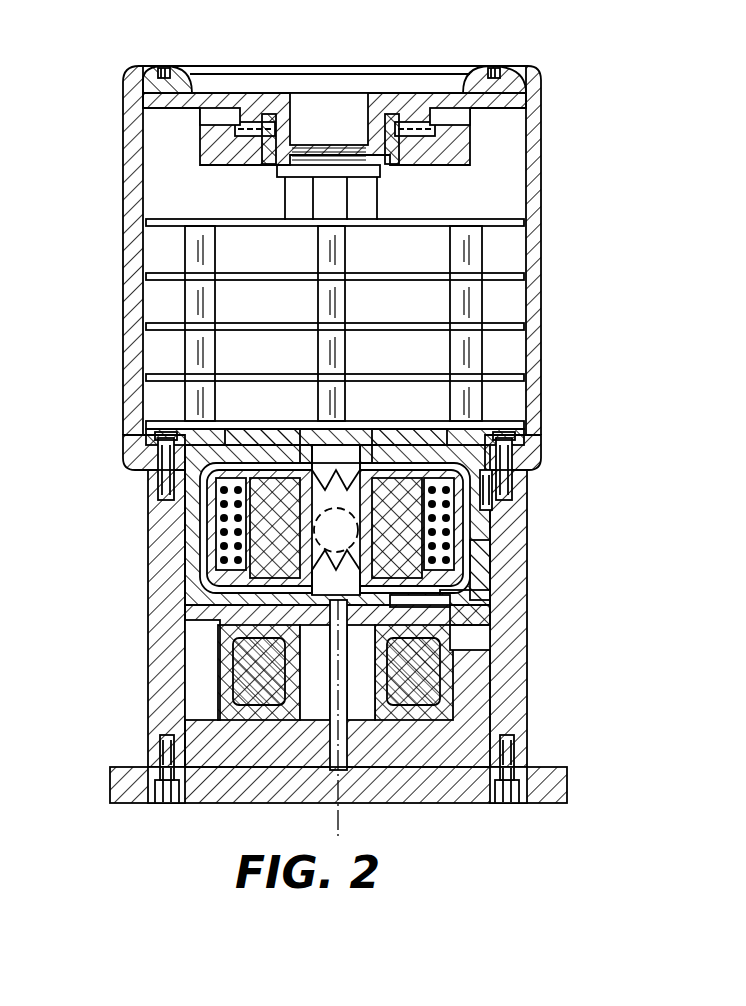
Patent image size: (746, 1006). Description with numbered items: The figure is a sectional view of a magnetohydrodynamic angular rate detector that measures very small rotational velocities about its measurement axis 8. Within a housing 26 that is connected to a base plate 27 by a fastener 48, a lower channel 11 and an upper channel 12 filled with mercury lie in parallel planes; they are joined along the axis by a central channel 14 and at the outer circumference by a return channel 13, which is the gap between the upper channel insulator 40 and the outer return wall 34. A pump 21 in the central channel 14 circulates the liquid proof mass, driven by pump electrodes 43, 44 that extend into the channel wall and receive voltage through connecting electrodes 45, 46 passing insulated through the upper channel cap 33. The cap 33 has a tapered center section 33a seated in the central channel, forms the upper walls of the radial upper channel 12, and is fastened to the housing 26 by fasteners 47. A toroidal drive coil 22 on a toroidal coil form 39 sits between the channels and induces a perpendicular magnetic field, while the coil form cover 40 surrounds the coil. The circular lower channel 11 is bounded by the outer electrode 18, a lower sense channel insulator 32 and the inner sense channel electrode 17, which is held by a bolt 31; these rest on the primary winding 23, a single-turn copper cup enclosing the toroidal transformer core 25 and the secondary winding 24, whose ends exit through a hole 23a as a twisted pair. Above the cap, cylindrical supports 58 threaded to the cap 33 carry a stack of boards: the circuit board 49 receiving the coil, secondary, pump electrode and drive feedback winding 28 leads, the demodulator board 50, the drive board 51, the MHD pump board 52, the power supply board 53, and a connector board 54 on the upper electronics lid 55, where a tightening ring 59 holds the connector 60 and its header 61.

The measurement axis 8 is at (310, 810).
The lower channel 11 is at (460, 620).
The upper channel 12 is at (390, 440).
The return channel 13 is at (545, 450).
The central channel 14 is at (170, 508).
The inner sense channel electrode 17 is at (225, 567).
The outer electrode 18 is at (210, 605).
The pump 21 is at (515, 510).
The drive coil 22 is at (515, 575).
The primary winding 23 is at (240, 740).
The hole 23a is at (200, 663).
The secondary winding 24 is at (460, 660).
The toroidal transformer core 25 is at (440, 690).
The housing 26 is at (515, 740).
The base plate 27 is at (470, 805).
The drive feedback winding 28 is at (520, 478).
The bolt 31 is at (370, 805).
The lower sense channel insulator 32 is at (450, 640).
The upper channel cap 33 is at (148, 455).
The tapered center section 33a is at (300, 435).
The outer return wall 34 is at (450, 560).
The toroidal coil form 39 is at (185, 492).
The upper channel insulator 40 is at (450, 590).
The pump electrode 43 is at (455, 545).
The pump electrode 44 is at (225, 545).
The connecting electrode 45 is at (455, 440).
The connecting electrode 46 is at (162, 446).
The fastener 47 is at (148, 425).
The fastener 48 is at (168, 805).
The circuit board 49 is at (355, 430).
The demodulator board 50 is at (148, 378).
The drive board 51 is at (148, 327).
The MHD pump board 52 is at (148, 277).
The power supply board 53 is at (148, 223).
The connector board 54 is at (382, 172).
The upper electronics lid 55 is at (150, 110).
The cylindrical supports 58 is at (317, 252).
The tightening ring 59 is at (510, 60).
The connector 60 is at (345, 120).
The header 61 is at (455, 150).